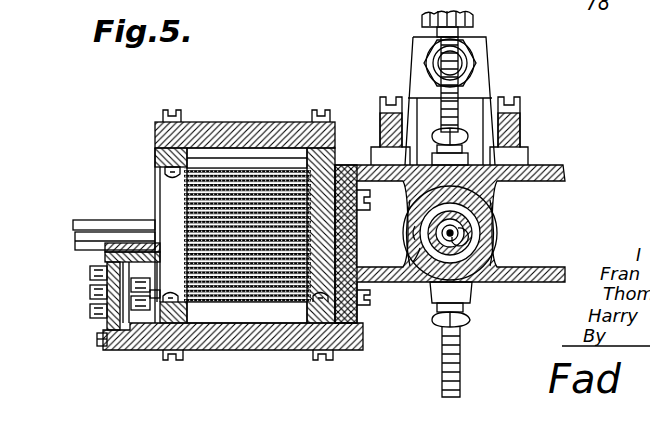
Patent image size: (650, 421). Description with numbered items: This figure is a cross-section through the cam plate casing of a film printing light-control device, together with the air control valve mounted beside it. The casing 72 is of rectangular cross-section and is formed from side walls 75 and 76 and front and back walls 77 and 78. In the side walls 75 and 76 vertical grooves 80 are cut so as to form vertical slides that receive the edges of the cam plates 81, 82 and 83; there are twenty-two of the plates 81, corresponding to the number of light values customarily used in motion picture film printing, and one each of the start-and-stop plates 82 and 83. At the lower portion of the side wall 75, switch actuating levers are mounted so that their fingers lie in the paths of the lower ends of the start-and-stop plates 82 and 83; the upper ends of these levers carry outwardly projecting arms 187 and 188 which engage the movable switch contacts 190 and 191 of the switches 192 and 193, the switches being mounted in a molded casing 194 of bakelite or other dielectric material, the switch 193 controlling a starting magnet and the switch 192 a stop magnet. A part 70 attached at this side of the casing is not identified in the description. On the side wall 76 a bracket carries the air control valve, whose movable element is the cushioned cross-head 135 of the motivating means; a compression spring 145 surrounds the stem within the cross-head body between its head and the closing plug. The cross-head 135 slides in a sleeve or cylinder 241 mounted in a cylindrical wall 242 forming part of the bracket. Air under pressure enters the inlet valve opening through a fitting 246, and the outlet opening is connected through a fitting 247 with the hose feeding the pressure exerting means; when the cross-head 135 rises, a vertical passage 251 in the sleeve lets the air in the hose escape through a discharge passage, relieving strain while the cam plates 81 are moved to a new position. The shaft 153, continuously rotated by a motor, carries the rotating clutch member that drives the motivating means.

The mounting plate 70 is at (75, 234).
The casing 72 is at (156, 124).
The side wall 75 is at (163, 182).
The side wall 76 is at (318, 240).
The front wall 77 is at (237, 350).
The back wall 78 is at (233, 128).
The vertical grooves 80 is at (356, 165).
The cam plates 81 is at (271, 165).
The start-and-stop plate 82 is at (278, 298).
The start-and-stop plate 83 is at (263, 300).
The cushioned cross-head 135 is at (492, 206).
The compression spring 145 is at (480, 218).
The shaft 153 is at (462, 31).
The outwardly projecting arm 187 is at (146, 326).
The outwardly projecting arm 188 is at (148, 285).
The movable switch contact 190 is at (112, 342).
The movable switch contact 191 is at (128, 300).
The switch 192 is at (90, 318).
The switch 193 is at (90, 272).
The molded casing 194 is at (90, 296).
The sleeve or cylinder 241 is at (480, 233).
The cylindrical wall 242 is at (494, 253).
The fitting 246 is at (458, 108).
The fitting 247 is at (446, 345).
The vertical passage 251 is at (413, 262).